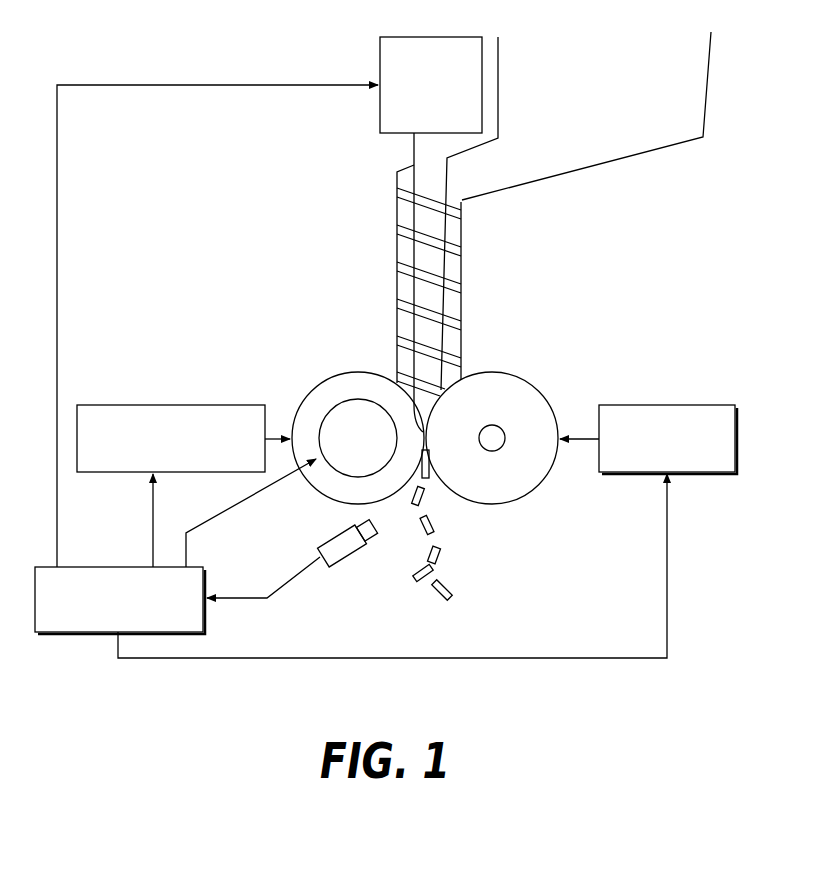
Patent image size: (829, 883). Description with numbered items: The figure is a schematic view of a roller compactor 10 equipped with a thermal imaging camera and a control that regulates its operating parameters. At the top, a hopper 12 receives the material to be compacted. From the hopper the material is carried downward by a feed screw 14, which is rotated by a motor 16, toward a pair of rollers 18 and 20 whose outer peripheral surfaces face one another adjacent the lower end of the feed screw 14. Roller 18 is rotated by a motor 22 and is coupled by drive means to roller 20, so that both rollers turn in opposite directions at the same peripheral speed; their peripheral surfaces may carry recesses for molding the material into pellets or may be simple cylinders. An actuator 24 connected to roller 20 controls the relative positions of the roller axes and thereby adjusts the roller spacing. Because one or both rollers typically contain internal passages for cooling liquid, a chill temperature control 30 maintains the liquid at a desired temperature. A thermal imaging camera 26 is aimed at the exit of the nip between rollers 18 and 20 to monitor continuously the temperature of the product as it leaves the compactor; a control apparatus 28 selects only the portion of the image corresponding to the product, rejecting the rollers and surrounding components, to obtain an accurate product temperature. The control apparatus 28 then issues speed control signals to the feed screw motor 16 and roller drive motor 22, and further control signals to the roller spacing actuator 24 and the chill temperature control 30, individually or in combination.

The roller compactor 10 is at (500, 298).
The hopper 12 is at (705, 82).
The feed screw 14 is at (425, 247).
The motor 16 is at (380, 46).
The roller 18 is at (356, 372).
The roller 20 is at (522, 378).
The motor 22 is at (337, 420).
The actuator 24 is at (665, 405).
The thermal imaging camera 26 is at (358, 560).
The control apparatus 28 is at (98, 567).
The chill temperature control 30 is at (168, 405).